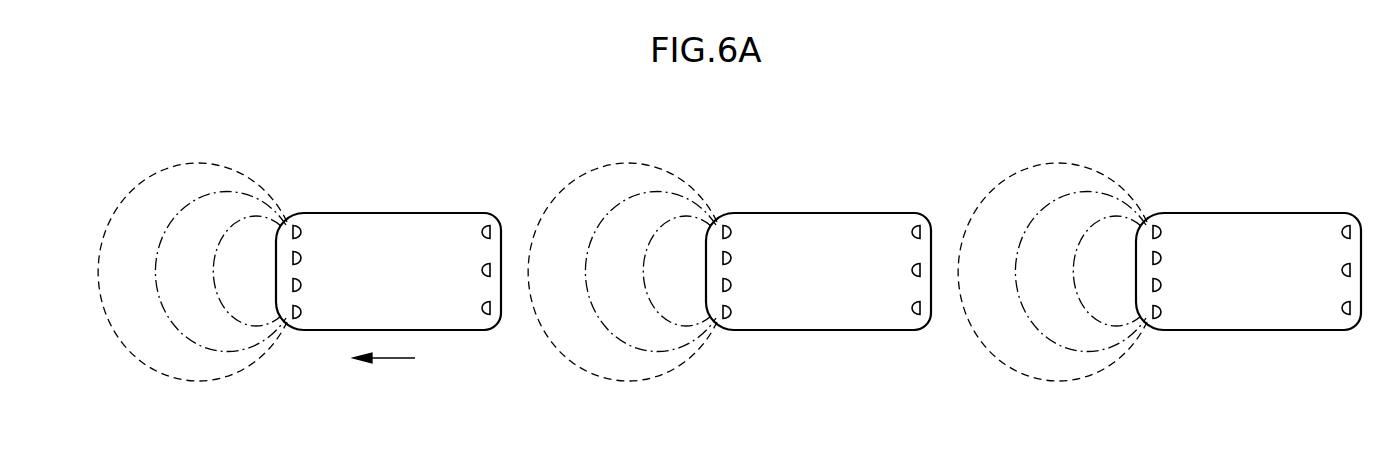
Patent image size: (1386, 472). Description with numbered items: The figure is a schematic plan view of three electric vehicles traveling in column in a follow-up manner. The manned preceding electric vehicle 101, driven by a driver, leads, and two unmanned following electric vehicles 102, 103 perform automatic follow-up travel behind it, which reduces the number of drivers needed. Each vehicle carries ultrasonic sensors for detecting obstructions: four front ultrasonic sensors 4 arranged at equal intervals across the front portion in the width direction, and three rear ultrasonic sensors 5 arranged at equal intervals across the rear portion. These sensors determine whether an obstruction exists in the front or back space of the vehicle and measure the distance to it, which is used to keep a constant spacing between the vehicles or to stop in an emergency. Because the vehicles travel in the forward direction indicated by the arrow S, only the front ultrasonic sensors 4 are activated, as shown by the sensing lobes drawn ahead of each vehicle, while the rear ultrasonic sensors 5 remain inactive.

The front ultrasonic sensors 4 is at (301, 229).
The rear ultrasonic sensors 5 is at (482, 230).
The preceding electric vehicle 101 is at (392, 212).
The following electric vehicle 102 is at (822, 212).
The following electric vehicle 103 is at (1260, 212).
The arrow indicating forward travel direction S is at (384, 372).